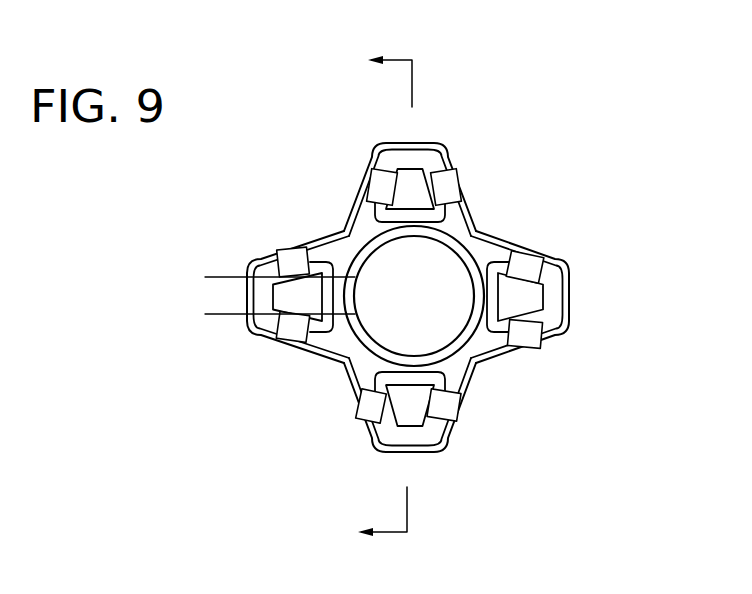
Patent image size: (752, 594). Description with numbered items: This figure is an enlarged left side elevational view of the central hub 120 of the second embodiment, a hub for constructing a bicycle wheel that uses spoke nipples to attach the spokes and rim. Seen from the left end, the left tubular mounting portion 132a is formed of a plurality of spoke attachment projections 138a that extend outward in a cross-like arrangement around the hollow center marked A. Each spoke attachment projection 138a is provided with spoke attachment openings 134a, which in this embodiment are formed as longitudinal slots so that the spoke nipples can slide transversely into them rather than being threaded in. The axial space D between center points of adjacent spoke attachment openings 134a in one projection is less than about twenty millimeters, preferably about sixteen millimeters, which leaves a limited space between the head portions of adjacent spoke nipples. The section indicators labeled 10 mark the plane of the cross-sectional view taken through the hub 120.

The section line 10 is at (385, 293).
The central hub 120 is at (567, 92).
The left tubular mounting portion 132a is at (483, 228).
The spoke attachment openings 134a is at (300, 292).
The spoke attachment projections 138a is at (455, 147).
The central aperture A is at (287, 296).
The axial space D is at (216, 277).